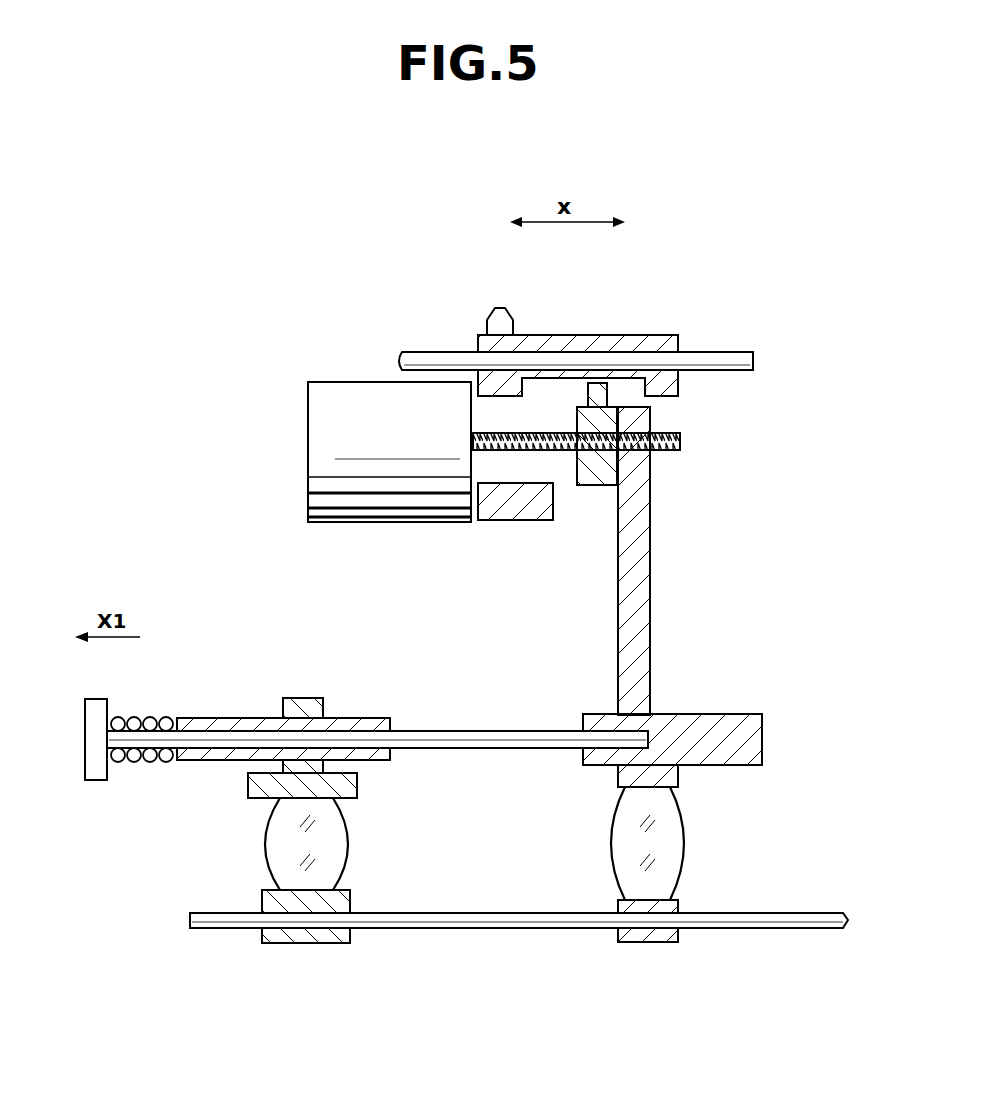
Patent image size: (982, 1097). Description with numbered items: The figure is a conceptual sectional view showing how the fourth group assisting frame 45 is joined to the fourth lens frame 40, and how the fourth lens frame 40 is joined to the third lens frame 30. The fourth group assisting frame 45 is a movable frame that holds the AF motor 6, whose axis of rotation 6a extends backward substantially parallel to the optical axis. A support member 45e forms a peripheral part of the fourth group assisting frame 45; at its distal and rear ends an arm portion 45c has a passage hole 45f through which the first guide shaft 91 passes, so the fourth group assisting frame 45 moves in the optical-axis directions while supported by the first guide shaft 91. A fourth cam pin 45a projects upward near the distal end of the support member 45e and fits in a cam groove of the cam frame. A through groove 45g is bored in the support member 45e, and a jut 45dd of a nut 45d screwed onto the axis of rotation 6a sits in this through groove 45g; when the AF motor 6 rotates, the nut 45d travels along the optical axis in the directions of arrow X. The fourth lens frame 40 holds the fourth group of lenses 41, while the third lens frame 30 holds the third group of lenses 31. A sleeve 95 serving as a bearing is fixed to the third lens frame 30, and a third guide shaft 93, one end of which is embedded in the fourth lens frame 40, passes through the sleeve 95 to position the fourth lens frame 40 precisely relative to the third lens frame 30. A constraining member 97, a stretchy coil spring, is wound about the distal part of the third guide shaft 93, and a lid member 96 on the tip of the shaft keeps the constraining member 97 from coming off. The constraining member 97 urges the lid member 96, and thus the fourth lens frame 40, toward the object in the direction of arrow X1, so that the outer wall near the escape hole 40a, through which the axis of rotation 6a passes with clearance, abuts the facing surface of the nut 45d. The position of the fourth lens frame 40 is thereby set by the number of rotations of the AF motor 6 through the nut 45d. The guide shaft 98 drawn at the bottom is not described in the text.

The AF motor 6 is at (392, 515).
The axis of rotation 6a is at (685, 440).
The fourth group assisting frame 45 is at (633, 308).
The fourth cam pin 45a is at (502, 322).
The arm portion 45c is at (497, 382).
The nut 45d is at (588, 485).
The jut 45dd is at (576, 380).
The support member 45e is at (530, 345).
The passage hole 45f is at (474, 348).
The through groove 45g is at (628, 392).
The fourth lens frame 40 is at (667, 776).
The escape hole 40a is at (655, 457).
The fourth group of lenses 41 is at (668, 845).
The third lens frame 30 is at (358, 776).
The third group of lenses 31 is at (345, 850).
The first guide shaft 91 is at (722, 358).
The third guide shaft 93 is at (548, 730).
The sleeve 95 is at (362, 720).
The lid member 96 is at (97, 770).
The constraining member 97 is at (140, 712).
The guide shaft 98 is at (800, 915).